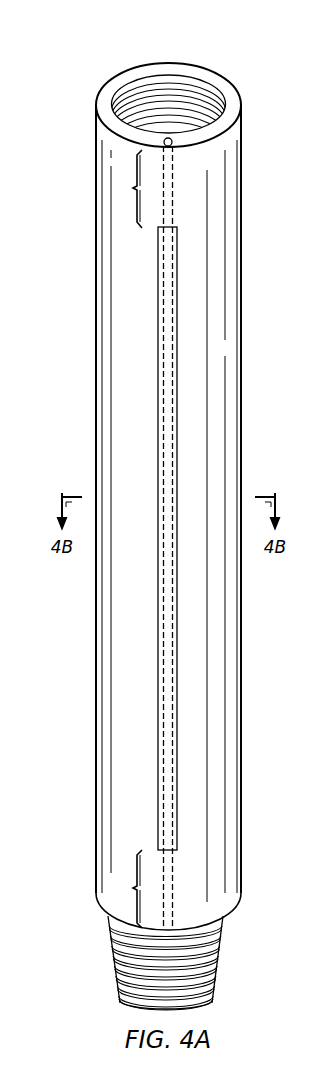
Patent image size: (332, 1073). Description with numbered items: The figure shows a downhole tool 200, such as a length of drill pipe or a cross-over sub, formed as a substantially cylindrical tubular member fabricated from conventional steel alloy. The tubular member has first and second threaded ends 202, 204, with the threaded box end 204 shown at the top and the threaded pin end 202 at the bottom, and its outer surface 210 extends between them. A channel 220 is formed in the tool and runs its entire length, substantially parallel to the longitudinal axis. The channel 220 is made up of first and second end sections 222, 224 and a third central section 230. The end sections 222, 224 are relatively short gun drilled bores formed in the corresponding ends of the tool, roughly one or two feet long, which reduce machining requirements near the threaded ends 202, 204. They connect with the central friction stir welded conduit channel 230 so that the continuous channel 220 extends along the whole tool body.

The downhole tool 200 is at (243, 275).
The first threaded end 202 is at (113, 961).
The second threaded end 204 is at (163, 88).
The outer surface of body 210 is at (217, 344).
The channel 220 is at (163, 357).
The first end section 222 is at (133, 188).
The second end section 224 is at (133, 888).
The friction stir welded conduit channel 230 is at (158, 413).